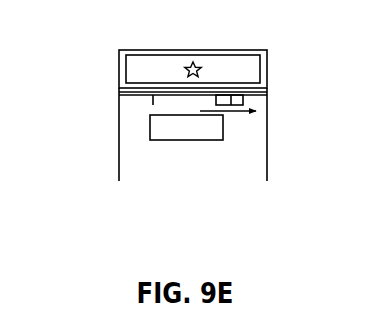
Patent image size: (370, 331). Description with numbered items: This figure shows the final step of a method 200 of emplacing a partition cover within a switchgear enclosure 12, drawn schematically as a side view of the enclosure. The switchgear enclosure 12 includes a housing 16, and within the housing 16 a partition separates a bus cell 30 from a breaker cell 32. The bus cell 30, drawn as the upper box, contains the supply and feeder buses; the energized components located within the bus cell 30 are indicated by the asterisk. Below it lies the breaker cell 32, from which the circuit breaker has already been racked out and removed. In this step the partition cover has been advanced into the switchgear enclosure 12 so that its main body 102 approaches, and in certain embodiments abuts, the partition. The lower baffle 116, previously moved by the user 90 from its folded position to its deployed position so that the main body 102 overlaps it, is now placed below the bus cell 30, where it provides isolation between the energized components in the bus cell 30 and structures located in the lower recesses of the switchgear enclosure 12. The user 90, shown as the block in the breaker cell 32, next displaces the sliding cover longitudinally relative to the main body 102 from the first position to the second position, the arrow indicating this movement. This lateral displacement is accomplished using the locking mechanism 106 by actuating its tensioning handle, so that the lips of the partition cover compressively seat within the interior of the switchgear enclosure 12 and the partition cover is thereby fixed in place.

The method of emplacing a partition cover 200 is at (98, 51).
The switchgear enclosure 12 is at (271, 140).
The housing 16 is at (117, 75).
The lower baffle 116 is at (247, 70).
The bus cell 30 is at (219, 62).
The locking mechanism 106 is at (264, 91).
The user 90 is at (178, 143).
The main body 102 is at (178, 99).
The breaker cell 32 is at (228, 165).